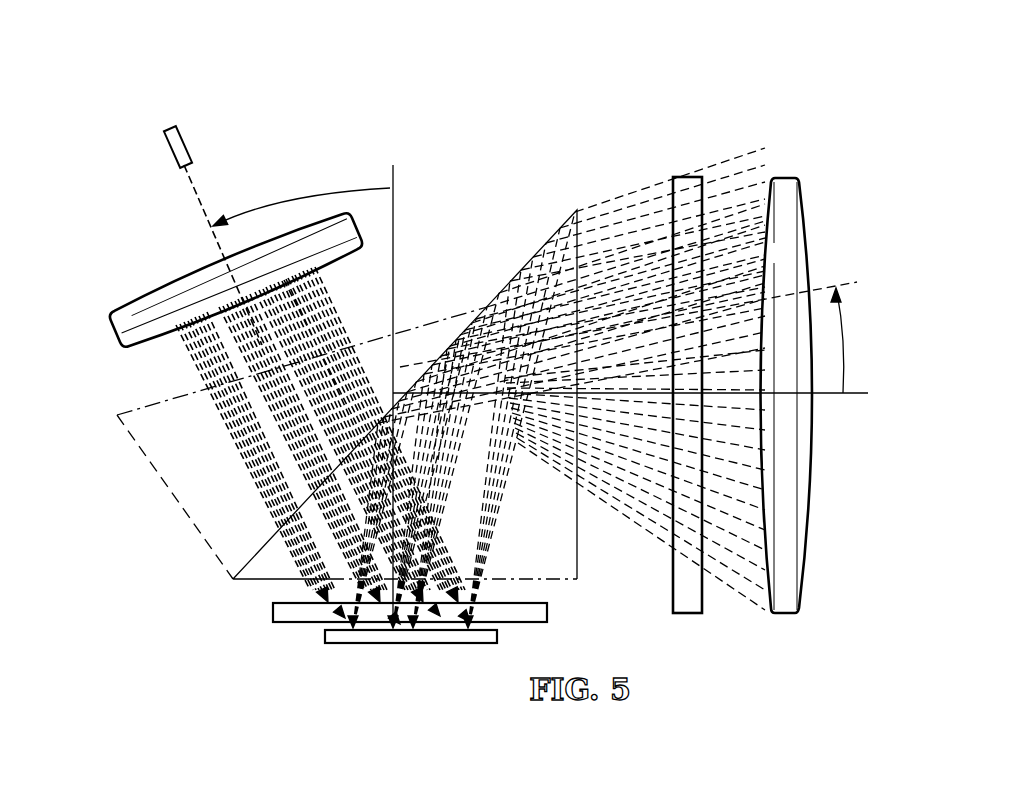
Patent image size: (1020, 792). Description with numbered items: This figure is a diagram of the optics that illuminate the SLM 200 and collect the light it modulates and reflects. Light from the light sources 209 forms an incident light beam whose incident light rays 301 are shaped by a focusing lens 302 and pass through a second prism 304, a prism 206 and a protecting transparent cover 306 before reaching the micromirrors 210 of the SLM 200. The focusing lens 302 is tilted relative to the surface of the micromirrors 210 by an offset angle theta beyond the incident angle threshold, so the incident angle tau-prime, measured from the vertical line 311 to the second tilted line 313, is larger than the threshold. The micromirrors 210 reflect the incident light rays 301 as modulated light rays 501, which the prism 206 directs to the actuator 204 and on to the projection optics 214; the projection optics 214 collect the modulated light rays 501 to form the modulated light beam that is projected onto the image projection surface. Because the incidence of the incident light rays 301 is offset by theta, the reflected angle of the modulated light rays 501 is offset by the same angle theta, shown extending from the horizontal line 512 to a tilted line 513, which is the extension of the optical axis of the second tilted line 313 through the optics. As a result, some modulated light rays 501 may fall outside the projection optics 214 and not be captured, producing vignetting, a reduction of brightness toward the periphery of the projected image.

The SLM 200 is at (283, 80).
The light sources 209 is at (168, 148).
The second tilted line 313 is at (197, 196).
The vertical line 311 is at (396, 186).
The focusing lens 302 is at (113, 333).
The incident light rays 301 is at (200, 362).
The second prism 304 is at (176, 494).
The prism 206 is at (582, 580).
The modulated light rays 501 is at (617, 489).
The protecting transparent cover 306 is at (304, 624).
The micromirrors 210 is at (400, 645).
The actuator 204 is at (696, 614).
The projection optics 214 is at (818, 498).
The horizontal line 512 is at (855, 394).
The tilted line 513 is at (845, 282).